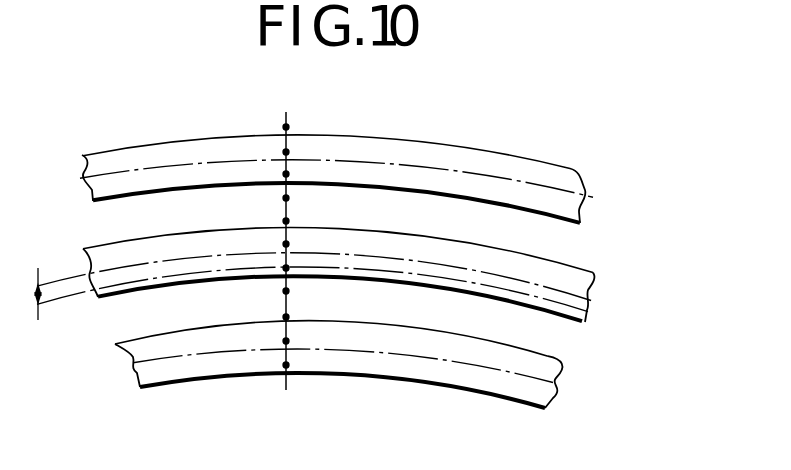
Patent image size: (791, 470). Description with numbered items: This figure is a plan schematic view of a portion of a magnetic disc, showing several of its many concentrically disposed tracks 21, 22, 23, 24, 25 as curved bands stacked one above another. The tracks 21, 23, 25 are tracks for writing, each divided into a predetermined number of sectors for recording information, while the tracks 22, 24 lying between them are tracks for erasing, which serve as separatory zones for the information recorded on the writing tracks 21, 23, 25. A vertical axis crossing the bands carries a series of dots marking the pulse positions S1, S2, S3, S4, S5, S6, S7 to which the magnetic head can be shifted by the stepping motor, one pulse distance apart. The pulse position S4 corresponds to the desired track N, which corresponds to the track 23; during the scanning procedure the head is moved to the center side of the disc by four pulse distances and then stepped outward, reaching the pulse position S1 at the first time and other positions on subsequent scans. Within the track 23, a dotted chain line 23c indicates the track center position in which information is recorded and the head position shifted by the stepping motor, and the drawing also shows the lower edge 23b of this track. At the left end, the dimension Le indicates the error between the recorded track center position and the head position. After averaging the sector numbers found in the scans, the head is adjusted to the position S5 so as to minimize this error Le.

The track for writing 21 is at (550, 357).
The track for erasing 22 is at (553, 337).
The track for writing 23 is at (563, 322).
The lower surface of intermediate member 23b is at (146, 287).
The dotted chain line 23c is at (597, 302).
The track for erasing 24 is at (585, 240).
The track for writing 25 is at (567, 172).
The pulse position S1 is at (286, 341).
The pulse position S2 is at (286, 317).
The pulse position S3 is at (286, 291).
The pulse position S4 is at (286, 268).
The pulse position S5 is at (284, 244).
The pulse position S6 is at (286, 221).
The pulse position S7 is at (286, 198).
The error Le is at (46, 310).